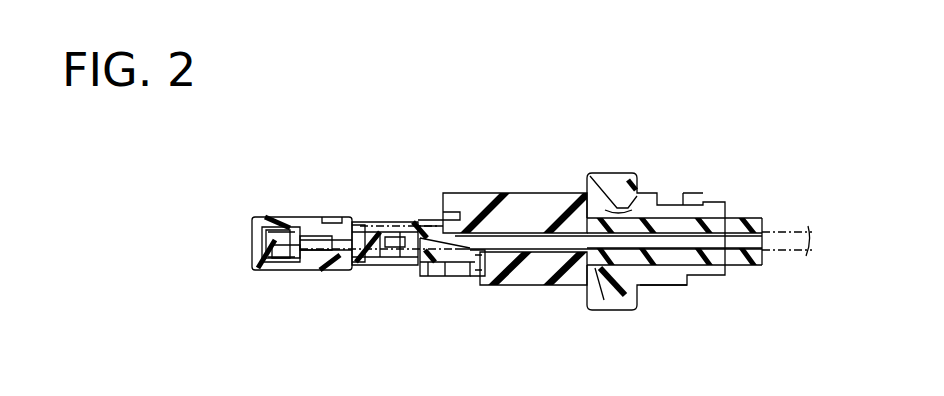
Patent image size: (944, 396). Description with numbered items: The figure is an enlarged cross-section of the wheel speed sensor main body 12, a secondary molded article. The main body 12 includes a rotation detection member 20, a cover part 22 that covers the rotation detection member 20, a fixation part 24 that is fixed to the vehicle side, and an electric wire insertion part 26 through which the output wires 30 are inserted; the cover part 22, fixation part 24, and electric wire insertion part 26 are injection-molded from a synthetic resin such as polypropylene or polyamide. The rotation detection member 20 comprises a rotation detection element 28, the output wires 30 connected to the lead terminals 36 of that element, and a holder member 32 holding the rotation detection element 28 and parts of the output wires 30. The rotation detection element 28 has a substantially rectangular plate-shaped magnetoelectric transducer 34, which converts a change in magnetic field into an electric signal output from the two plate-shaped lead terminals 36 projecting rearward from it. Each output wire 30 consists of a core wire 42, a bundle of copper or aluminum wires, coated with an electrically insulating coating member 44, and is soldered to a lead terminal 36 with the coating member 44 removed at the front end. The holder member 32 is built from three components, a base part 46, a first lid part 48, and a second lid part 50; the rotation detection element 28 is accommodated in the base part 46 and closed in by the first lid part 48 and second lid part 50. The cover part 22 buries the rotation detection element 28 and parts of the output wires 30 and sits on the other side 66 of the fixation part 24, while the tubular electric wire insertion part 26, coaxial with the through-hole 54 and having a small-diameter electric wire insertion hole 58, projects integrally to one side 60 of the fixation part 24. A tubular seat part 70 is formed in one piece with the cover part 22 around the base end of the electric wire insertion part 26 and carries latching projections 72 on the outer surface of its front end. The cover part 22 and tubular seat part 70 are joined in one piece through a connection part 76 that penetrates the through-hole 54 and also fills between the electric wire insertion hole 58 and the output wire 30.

The wheel speed sensor main body 12 is at (556, 106).
The other side 66 is at (546, 150).
The one side 60 is at (693, 148).
The rotation detection member 20 is at (517, 219).
The cover part 22 is at (514, 210).
The fixation part 24 is at (612, 195).
The electric wire insertion part 26 is at (745, 270).
The rotation detection element 28 is at (417, 212).
The output wires 30 is at (780, 240).
The holder member 32 is at (322, 278).
The magnetoelectric transducer 34 is at (270, 228).
The lead terminals 36 is at (364, 254).
The core wire 42 is at (420, 268).
The coating member 44 is at (476, 258).
The base part 46 is at (276, 260).
The first lid part 48 is at (320, 232).
The second lid part 50 is at (395, 230).
The through-hole 54 is at (620, 213).
The electric wire insertion hole 58 is at (625, 236).
The tubular seat part 70 is at (661, 283).
The latching projections 72 is at (705, 207).
The connection part 76 is at (615, 268).